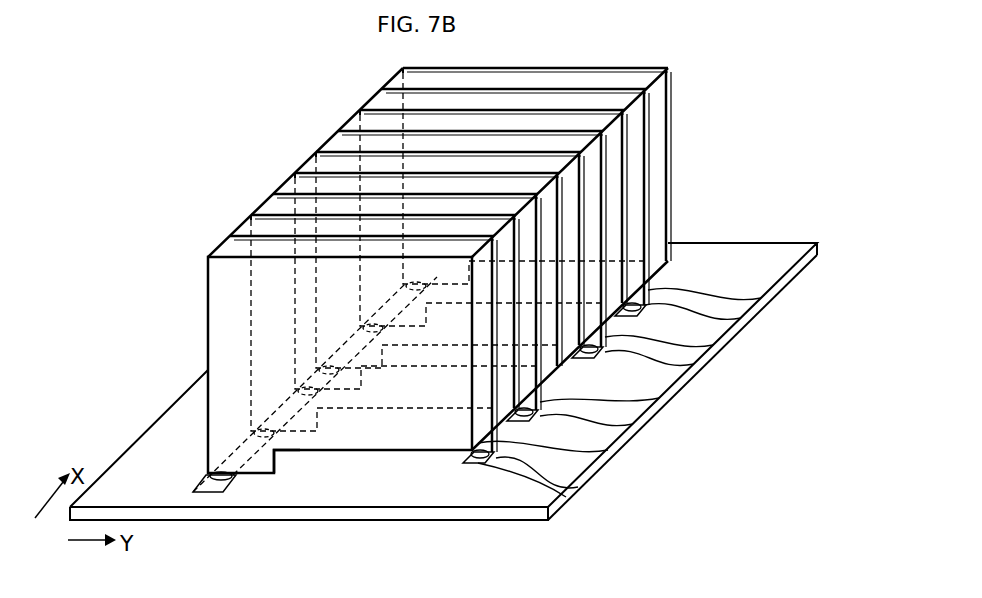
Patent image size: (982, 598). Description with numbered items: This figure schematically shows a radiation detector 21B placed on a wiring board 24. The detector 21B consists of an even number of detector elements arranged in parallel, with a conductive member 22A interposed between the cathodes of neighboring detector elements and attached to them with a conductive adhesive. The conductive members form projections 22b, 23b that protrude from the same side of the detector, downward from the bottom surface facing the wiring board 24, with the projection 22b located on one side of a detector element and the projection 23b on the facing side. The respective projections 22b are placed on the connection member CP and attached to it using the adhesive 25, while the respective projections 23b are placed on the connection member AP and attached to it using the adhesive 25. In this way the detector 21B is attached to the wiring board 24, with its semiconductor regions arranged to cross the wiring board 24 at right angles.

The detector 21B is at (253, 200).
The conductive member 22A is at (225, 280).
The projection 22b is at (270, 461).
The wiring board 24 is at (734, 242).
The projection 23b is at (763, 298).
The adhesive 25 is at (218, 492).
The connection member AP is at (716, 345).
The connection member CP is at (254, 476).